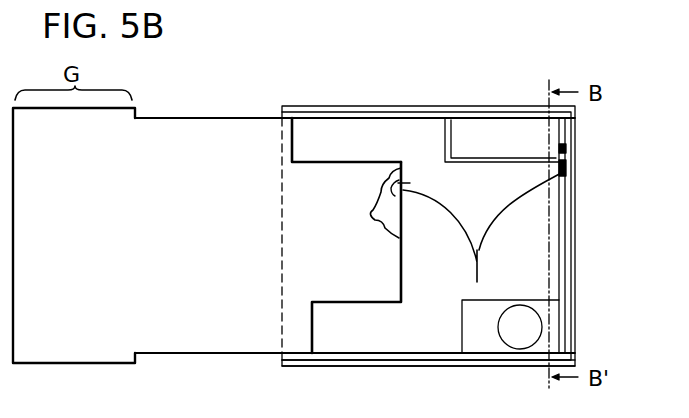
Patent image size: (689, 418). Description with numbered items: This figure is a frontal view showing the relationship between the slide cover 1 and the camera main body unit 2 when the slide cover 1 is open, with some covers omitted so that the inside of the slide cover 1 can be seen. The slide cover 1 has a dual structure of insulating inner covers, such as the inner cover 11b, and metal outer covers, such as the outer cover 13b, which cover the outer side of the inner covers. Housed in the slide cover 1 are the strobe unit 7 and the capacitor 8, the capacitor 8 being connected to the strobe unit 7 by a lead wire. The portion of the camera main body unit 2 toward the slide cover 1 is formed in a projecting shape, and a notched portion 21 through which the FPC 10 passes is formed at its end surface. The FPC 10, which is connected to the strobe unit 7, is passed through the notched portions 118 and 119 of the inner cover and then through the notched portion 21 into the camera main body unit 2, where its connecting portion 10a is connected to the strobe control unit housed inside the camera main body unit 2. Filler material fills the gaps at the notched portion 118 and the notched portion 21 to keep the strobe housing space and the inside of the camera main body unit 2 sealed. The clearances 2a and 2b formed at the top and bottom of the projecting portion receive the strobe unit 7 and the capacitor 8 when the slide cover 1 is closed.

The slide cover 1 is at (388, 106).
The camera main body unit 2 is at (212, 119).
The clearance 2a is at (295, 147).
The clearance 2b is at (322, 325).
The strobe unit 7 is at (492, 141).
The capacitor 8 is at (535, 323).
The FPC 10 is at (460, 262).
The connecting portion 10a is at (378, 220).
The inner cover 11b is at (451, 329).
The outer cover 13b is at (380, 365).
The notched portion 21 is at (406, 188).
The notched portion 118 is at (566, 150).
The notched portion 119 is at (567, 178).